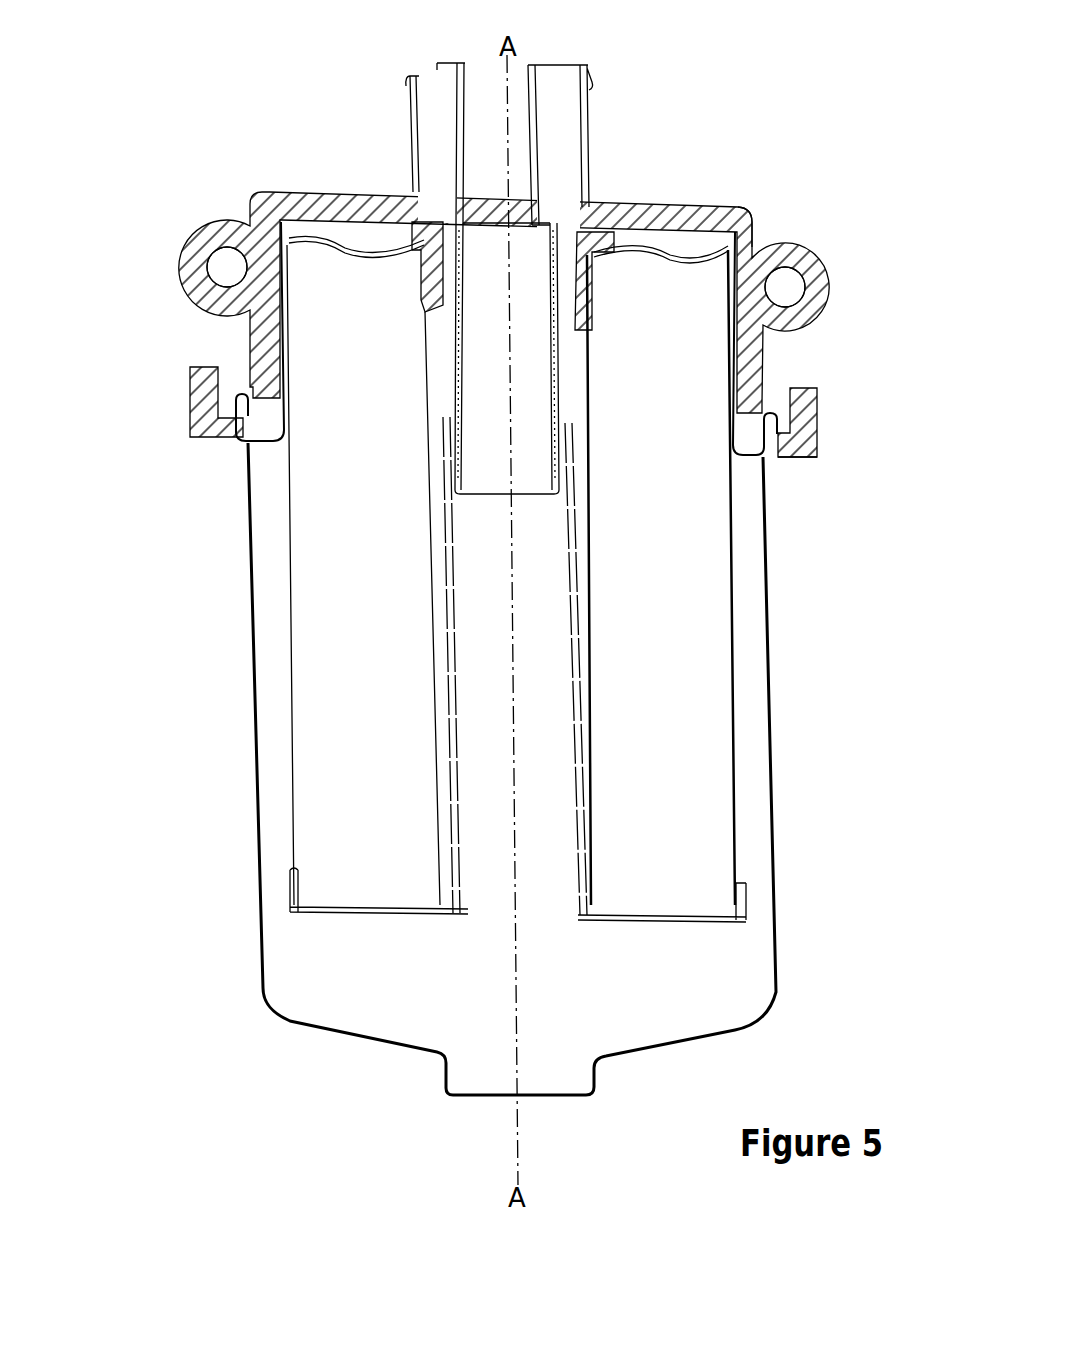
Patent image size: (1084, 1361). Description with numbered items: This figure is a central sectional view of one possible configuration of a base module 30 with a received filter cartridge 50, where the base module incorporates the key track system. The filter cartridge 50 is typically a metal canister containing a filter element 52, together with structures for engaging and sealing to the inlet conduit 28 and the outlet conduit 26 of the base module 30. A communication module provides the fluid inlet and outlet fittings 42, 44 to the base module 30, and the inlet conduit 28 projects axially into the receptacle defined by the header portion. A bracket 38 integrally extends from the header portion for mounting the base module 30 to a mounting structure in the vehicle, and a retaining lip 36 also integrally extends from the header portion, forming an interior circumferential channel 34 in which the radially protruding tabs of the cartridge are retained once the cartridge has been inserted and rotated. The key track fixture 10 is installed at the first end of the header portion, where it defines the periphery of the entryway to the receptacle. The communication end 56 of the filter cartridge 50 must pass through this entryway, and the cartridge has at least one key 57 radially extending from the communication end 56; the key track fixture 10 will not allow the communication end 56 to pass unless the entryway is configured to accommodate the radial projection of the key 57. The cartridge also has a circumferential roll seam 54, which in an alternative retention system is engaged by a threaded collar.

The key track fixture 10 is at (277, 387).
The outlet conduit 26 is at (582, 328).
The inlet conduit 28 is at (562, 475).
The base module 30 is at (272, 197).
The circumferential channel 34 is at (795, 432).
The retaining lip 36 is at (787, 458).
The bracket 38 is at (790, 243).
The fluid inlet fitting 42 is at (588, 128).
The fluid outlet fitting 44 is at (407, 135).
The filter cartridge 50 is at (257, 760).
The filter element 52 is at (710, 693).
The circumferential roll seam 54 is at (233, 413).
The communication end 56 is at (278, 213).
The key 57 is at (748, 226).